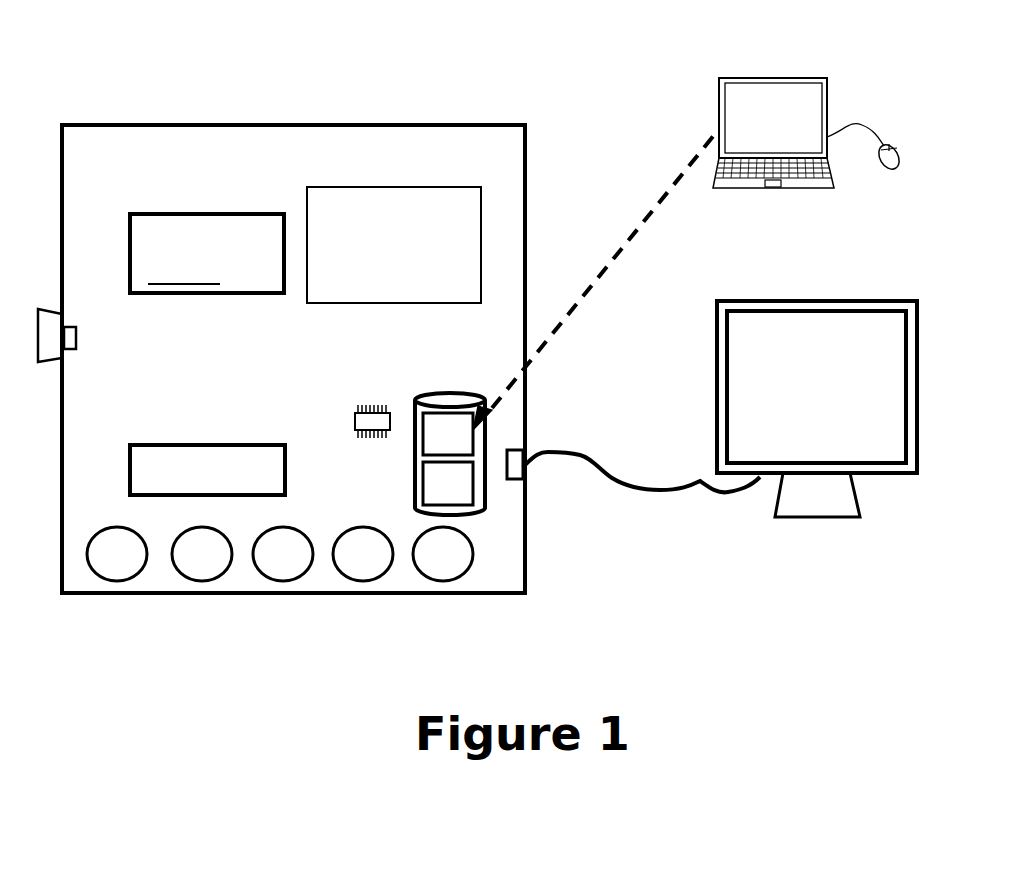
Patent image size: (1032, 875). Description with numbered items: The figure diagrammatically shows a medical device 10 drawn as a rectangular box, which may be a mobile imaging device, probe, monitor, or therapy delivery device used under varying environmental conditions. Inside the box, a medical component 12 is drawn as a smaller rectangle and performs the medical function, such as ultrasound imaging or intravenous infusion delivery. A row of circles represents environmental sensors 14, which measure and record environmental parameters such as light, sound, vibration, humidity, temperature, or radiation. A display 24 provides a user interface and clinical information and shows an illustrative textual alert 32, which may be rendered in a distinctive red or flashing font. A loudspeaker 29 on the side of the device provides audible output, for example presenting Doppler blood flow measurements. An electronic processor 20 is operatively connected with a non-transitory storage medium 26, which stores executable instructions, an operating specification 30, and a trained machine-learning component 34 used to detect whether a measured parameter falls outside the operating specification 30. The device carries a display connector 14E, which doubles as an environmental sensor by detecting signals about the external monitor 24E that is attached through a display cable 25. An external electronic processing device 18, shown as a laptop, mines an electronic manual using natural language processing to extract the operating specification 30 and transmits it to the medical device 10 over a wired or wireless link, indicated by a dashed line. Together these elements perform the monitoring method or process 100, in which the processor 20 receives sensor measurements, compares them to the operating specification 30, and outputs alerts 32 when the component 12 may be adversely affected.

The medical device 10 is at (110, 162).
The medical component 12 is at (170, 462).
The environmental sensor 14 is at (488, 570).
The display connector 14E is at (523, 450).
The electronic processing device 18 is at (800, 72).
The electronic processor 20 is at (372, 405).
The display 24 is at (232, 228).
The external monitor 24E is at (723, 358).
The display cable 25 is at (616, 477).
The non-transitory storage media 26 is at (445, 400).
The loudspeaker 29 is at (53, 321).
The operating specification 30 is at (454, 432).
The alert 32 is at (175, 258).
The machine-learning component 34 is at (454, 484).
The monitoring method or process 100 is at (483, 362).